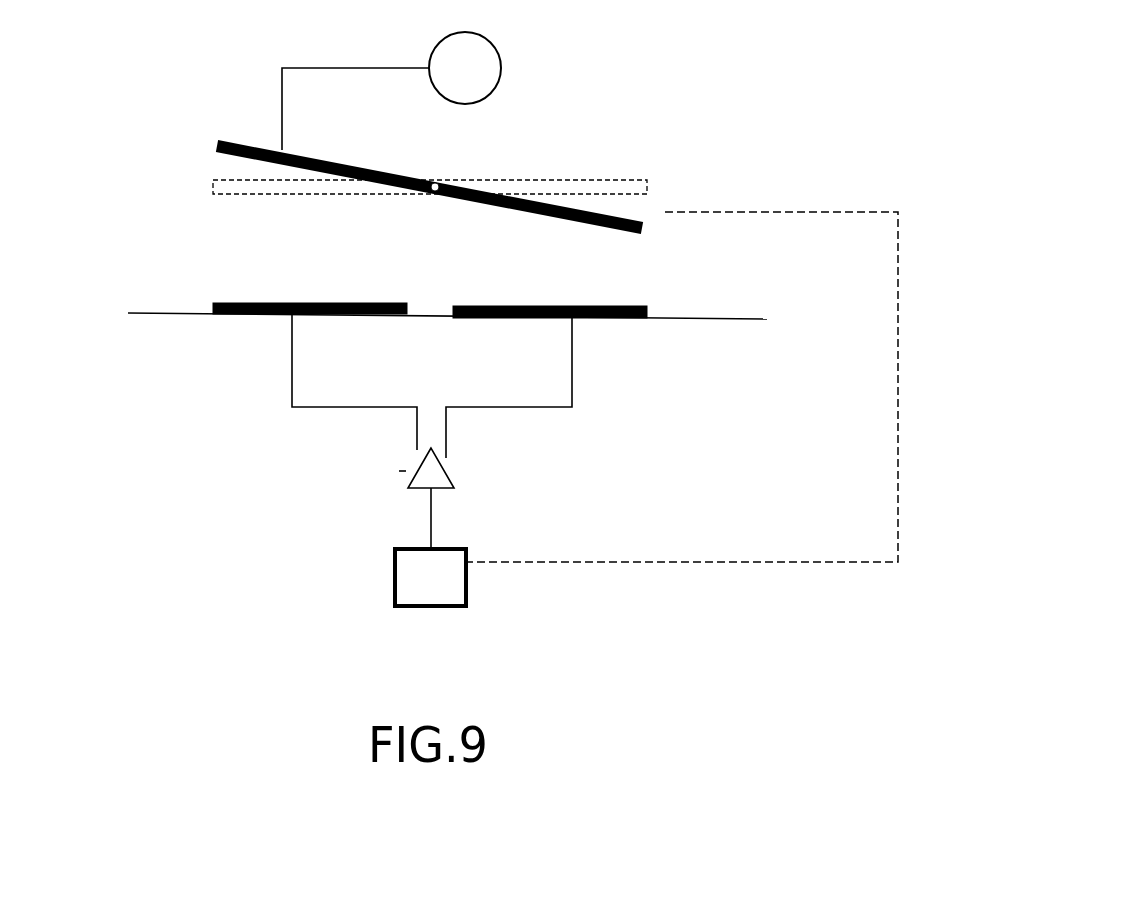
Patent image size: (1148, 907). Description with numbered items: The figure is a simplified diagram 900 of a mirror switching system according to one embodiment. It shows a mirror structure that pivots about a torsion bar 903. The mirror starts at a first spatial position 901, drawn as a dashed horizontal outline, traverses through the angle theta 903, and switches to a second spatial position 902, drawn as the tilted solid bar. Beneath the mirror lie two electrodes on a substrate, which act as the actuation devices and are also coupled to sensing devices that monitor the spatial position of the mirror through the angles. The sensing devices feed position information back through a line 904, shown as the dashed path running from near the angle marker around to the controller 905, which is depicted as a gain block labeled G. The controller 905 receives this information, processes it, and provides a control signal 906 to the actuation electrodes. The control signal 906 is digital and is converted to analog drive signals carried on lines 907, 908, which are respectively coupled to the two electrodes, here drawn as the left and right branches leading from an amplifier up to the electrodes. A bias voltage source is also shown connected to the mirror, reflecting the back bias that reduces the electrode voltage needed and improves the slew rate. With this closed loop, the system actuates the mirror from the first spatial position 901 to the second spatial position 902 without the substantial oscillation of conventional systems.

The simplified diagram 900 is at (611, 57).
The first spatial position 901 is at (580, 185).
The second spatial position 902 is at (645, 230).
The torsion bar 903 is at (432, 192).
The line 904 is at (700, 563).
The controller 905 is at (395, 578).
The control signal 906 is at (430, 515).
The line 907 is at (292, 352).
The line 908 is at (572, 357).